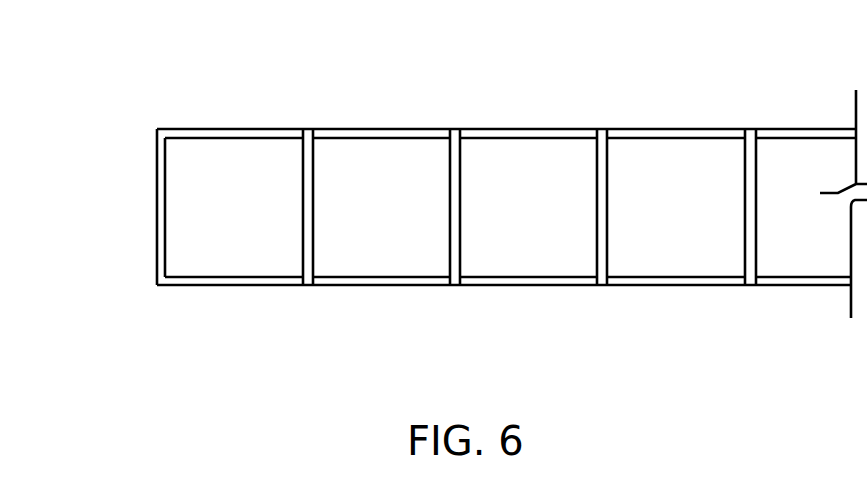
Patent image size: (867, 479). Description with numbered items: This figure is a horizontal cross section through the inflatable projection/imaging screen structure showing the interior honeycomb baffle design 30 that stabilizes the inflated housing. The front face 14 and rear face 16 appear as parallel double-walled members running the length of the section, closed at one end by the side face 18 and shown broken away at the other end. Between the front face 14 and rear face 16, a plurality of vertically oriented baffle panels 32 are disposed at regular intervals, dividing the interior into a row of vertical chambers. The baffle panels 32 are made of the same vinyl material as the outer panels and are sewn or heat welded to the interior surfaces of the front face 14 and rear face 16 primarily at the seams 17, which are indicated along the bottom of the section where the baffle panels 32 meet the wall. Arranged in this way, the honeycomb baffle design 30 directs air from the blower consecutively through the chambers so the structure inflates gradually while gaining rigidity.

The honeycomb baffle design 30 is at (205, 103).
The rear face 16 is at (432, 129).
The front face 14 is at (197, 287).
The side face 18 is at (157, 183).
The seams 17 is at (305, 287).
The baffle panels 32 is at (316, 172).